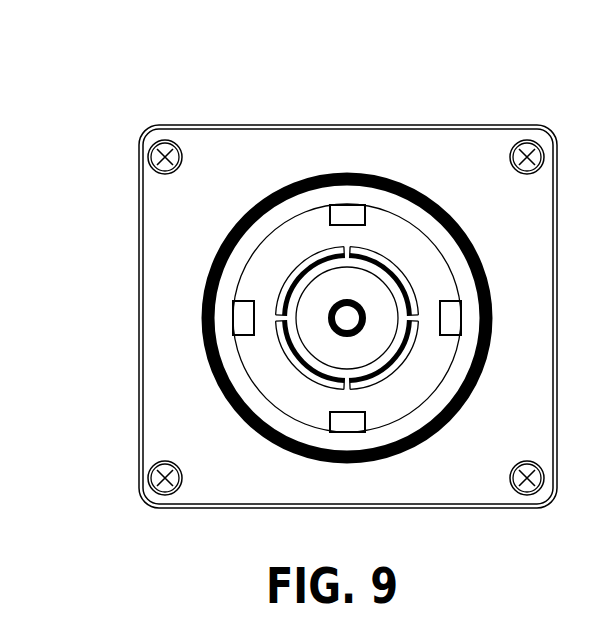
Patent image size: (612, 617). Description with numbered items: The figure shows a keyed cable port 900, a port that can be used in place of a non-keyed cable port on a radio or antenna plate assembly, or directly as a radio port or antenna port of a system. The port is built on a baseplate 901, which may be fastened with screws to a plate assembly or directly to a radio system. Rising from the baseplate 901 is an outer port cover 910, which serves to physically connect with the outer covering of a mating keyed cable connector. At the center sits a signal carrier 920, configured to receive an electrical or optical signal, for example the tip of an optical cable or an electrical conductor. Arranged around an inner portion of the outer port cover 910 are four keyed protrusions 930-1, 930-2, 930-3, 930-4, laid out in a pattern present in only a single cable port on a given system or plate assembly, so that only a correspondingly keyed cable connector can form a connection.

The keyed cable port 900 is at (90, 89).
The baseplate 901 is at (138, 190).
The outer port cover 910 is at (218, 248).
The signal carrier 920 is at (328, 311).
The keyed protrusion 930-1 is at (237, 334).
The keyed protrusion 930-2 is at (367, 424).
The keyed protrusion 930-3 is at (452, 297).
The keyed protrusion 930-4 is at (358, 202).